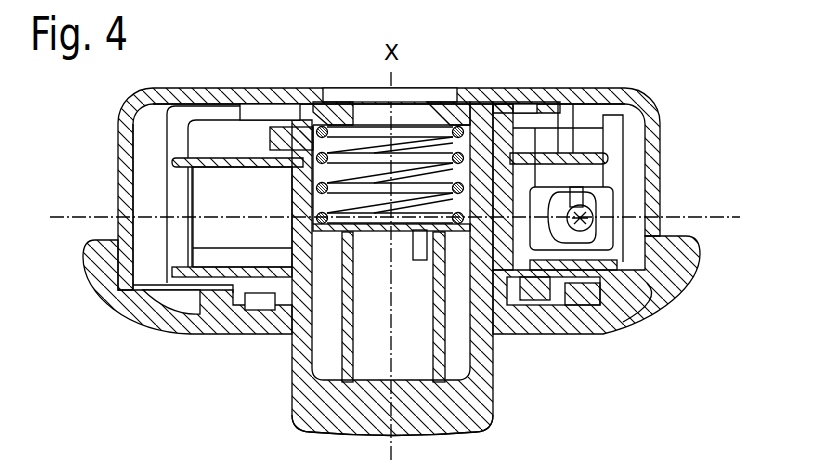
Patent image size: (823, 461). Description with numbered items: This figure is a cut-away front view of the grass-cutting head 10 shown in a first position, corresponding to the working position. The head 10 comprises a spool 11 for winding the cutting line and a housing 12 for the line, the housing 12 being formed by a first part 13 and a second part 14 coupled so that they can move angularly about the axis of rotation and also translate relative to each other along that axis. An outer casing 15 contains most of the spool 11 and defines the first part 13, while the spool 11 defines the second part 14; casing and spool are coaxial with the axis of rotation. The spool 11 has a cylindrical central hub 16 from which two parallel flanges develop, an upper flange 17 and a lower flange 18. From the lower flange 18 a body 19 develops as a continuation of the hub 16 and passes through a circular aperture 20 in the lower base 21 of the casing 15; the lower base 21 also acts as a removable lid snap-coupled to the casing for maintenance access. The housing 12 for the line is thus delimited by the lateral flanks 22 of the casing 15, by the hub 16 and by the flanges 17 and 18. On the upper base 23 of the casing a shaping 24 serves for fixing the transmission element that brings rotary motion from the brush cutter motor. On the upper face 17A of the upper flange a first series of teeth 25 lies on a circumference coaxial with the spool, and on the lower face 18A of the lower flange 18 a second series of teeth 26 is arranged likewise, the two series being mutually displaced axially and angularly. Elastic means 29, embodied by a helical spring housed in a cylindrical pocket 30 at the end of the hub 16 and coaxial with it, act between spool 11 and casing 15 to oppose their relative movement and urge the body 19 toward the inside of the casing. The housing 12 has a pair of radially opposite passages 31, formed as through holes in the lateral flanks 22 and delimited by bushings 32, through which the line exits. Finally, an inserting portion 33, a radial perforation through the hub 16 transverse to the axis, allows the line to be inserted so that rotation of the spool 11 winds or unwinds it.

The grass-cutting head 10 is at (84, 301).
The spool 11 is at (614, 158).
The housing 12 is at (207, 210).
The first part 13 is at (119, 108).
The second part 14 is at (595, 149).
The outer casing 15 is at (85, 243).
The cylindrical central hub 16 is at (290, 236).
The upper flange 17 is at (197, 183).
The upper face 17A is at (543, 157).
The lower flange 18 is at (667, 275).
The lower face 18A is at (577, 283).
The body 19 is at (470, 417).
The circular aperture 20 is at (295, 340).
The lower base 21 is at (148, 330).
The lateral flanks 22 is at (118, 147).
The upper base 23 is at (178, 97).
The shaping 24 is at (338, 97).
The first series of teeth 25 is at (284, 127).
The second series of teeth 26 is at (225, 337).
The elastic means 29 is at (410, 126).
The cylindrical pocket 30 is at (313, 185).
The passages 31 is at (590, 200).
The bushings 32 is at (592, 226).
The inserting portion 33 is at (413, 250).